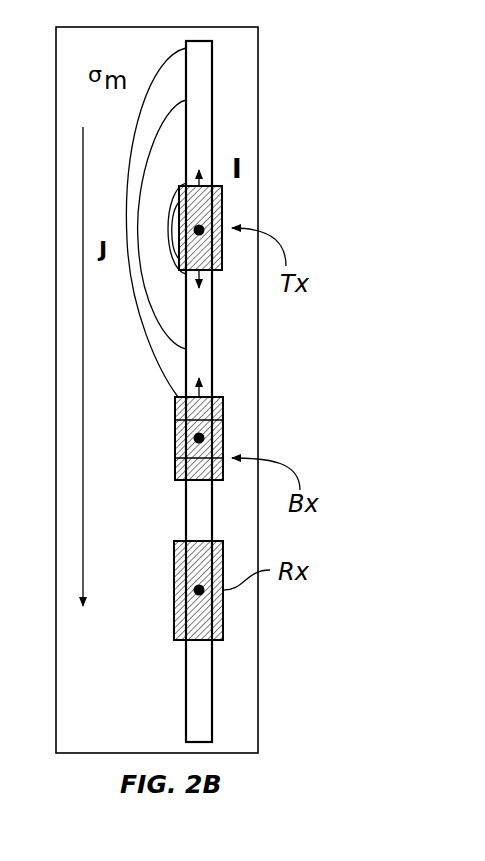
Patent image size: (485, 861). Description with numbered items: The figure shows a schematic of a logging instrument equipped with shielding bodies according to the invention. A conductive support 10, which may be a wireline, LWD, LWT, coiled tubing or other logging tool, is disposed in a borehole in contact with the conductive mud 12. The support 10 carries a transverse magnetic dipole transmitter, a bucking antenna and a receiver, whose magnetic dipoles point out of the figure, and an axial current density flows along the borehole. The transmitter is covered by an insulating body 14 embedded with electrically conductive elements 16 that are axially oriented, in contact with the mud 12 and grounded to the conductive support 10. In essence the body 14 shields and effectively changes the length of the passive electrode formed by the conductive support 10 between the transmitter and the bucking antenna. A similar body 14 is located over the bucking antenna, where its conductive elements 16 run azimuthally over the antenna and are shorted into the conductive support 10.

The conductive support 10 is at (212, 118).
The conductive mud 12 is at (58, 660).
The insulating body 14 is at (222, 203).
The electrically conductive elements 16 is at (222, 270).